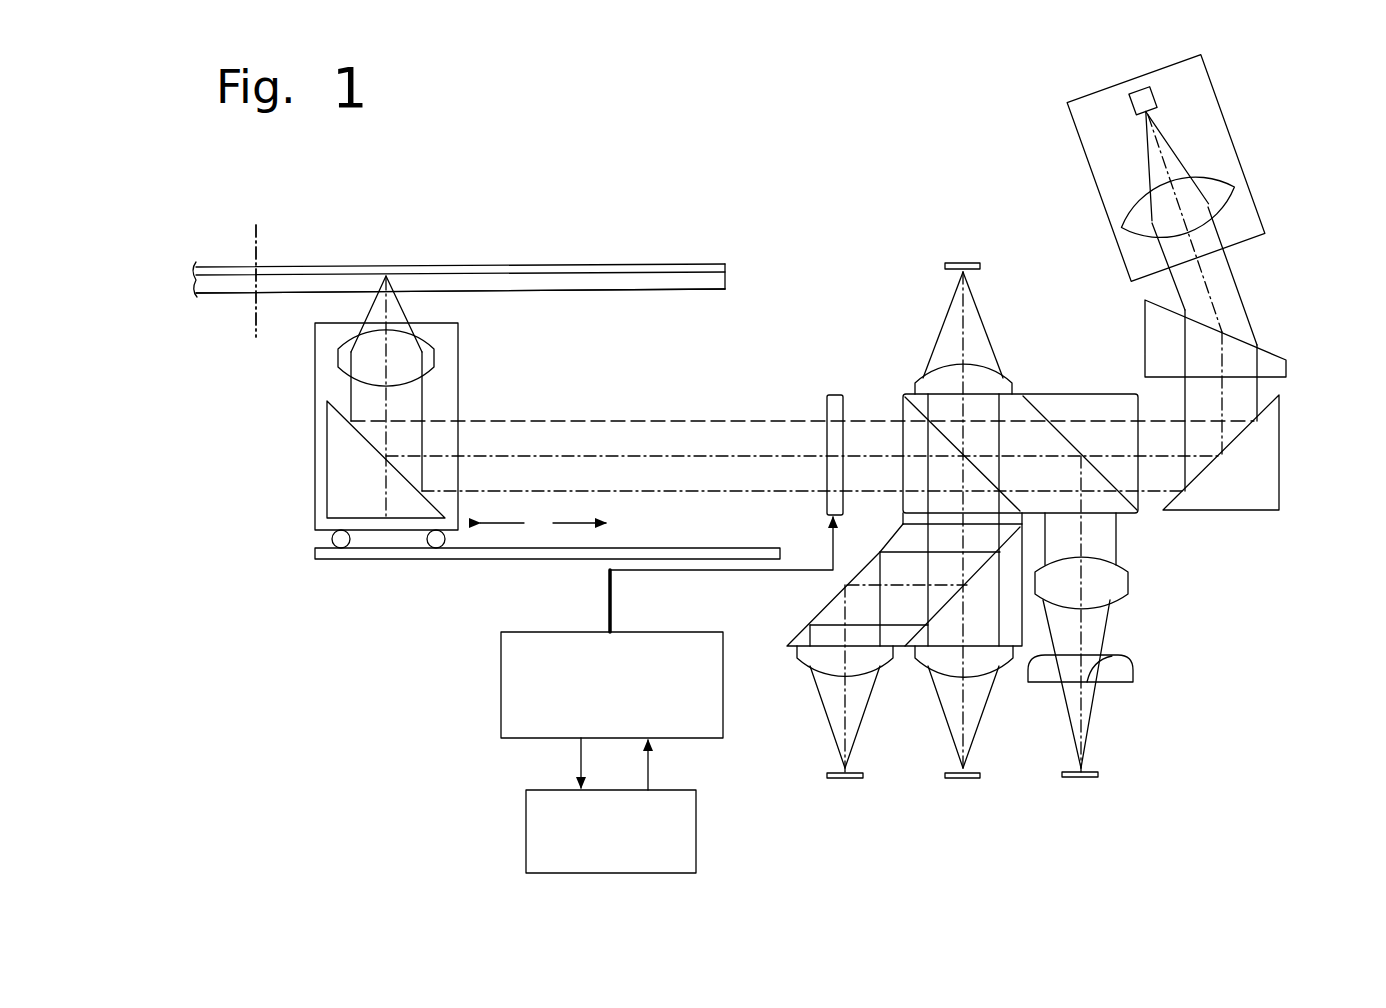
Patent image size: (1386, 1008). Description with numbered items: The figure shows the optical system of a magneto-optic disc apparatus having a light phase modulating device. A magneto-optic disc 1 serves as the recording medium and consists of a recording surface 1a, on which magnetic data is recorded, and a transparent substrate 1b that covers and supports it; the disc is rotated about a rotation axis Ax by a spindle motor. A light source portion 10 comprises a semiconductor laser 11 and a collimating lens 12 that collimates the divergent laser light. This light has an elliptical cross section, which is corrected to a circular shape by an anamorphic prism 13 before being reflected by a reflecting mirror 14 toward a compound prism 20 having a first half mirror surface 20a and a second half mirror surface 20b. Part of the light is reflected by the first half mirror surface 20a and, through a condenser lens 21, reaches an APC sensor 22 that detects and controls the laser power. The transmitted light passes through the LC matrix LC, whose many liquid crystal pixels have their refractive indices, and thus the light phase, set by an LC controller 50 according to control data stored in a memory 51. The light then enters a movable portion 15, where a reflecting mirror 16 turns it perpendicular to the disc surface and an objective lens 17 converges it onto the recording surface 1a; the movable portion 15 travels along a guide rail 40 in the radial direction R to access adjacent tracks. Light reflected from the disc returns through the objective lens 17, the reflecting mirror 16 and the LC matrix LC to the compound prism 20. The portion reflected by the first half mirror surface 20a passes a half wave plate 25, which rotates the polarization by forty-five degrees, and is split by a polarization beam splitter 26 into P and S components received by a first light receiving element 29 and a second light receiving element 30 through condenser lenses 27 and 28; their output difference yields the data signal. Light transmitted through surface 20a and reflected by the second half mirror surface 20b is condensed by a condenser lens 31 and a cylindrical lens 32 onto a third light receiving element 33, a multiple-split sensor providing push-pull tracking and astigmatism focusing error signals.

The magneto-optic disc 1 is at (600, 262).
The recording surface 1a is at (574, 268).
The transparent substrate 1b is at (526, 304).
The light source portion 10 is at (1238, 134).
The semiconductor laser 11 is at (1153, 93).
The collimating lens 12 is at (1228, 190).
The anamorphic prism 13 is at (1287, 357).
The reflecting mirror 14 is at (1271, 476).
The movable portion 15 is at (313, 477).
The reflecting mirror 16 is at (342, 500).
The objective lens 17 is at (343, 360).
The compound prism 20 is at (1059, 391).
The first half mirror surface 20a is at (902, 407).
The second half mirror surface 20b is at (1023, 406).
The condenser lens 21 is at (922, 383).
The APC sensor 22 is at (948, 265).
The ½ wave plate 25 is at (1046, 521).
The polarization beam splitter 26 is at (813, 602).
The condenser lens 27 is at (885, 661).
The condenser lens 28 is at (1005, 660).
The first light receiving element 29 is at (843, 770).
The second light receiving element 30 is at (953, 770).
The condenser lens 31 is at (1128, 582).
The cylindrical lens 32 is at (1133, 670).
The third light receiving element 33 is at (1092, 768).
The guide rail 40 is at (343, 562).
The LC controller 50 is at (501, 681).
The memory 51 is at (526, 840).
The LC matrix LC is at (833, 393).
The rotation axis Ax is at (257, 235).
The radial direction R is at (543, 524).